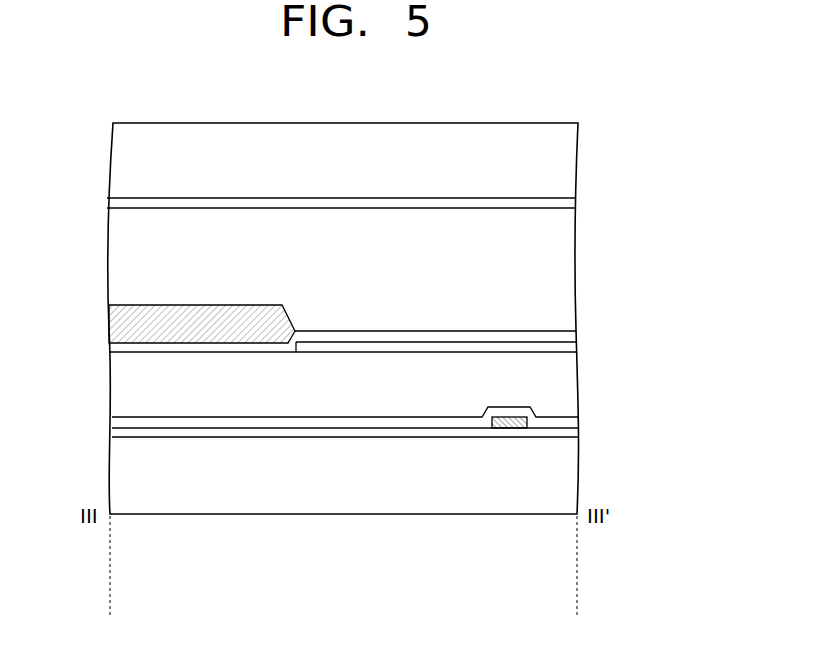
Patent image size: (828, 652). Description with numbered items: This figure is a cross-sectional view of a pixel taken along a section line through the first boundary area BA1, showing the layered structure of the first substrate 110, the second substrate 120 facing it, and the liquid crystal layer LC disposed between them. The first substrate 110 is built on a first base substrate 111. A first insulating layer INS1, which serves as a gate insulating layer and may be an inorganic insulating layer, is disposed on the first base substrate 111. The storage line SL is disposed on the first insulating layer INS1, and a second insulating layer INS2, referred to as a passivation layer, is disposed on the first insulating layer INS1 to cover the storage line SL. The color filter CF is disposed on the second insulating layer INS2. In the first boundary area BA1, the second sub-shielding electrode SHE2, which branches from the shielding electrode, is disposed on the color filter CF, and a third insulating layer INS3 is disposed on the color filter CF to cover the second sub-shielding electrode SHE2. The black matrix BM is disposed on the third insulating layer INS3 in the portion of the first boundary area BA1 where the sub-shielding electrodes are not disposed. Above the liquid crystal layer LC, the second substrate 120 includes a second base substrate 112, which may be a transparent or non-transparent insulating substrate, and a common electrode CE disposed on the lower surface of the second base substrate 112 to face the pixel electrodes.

The second base substrate 112 is at (558, 153).
The common electrode CE is at (558, 200).
The second substrate 120 is at (658, 142).
The liquid crystal layer LC is at (558, 267).
The black matrix BM is at (118, 321).
The third insulating layer INS3 is at (576, 334).
The second sub-shielding electrode SHE2 is at (576, 348).
The color filter CF is at (563, 388).
The second insulating layer INS2 is at (576, 422).
The first insulating layer INS1 is at (576, 433).
The storage line SL is at (520, 430).
The first base substrate 111 is at (558, 483).
The first substrate 110 is at (670, 325).
The first boundary area BA1 is at (577, 600).